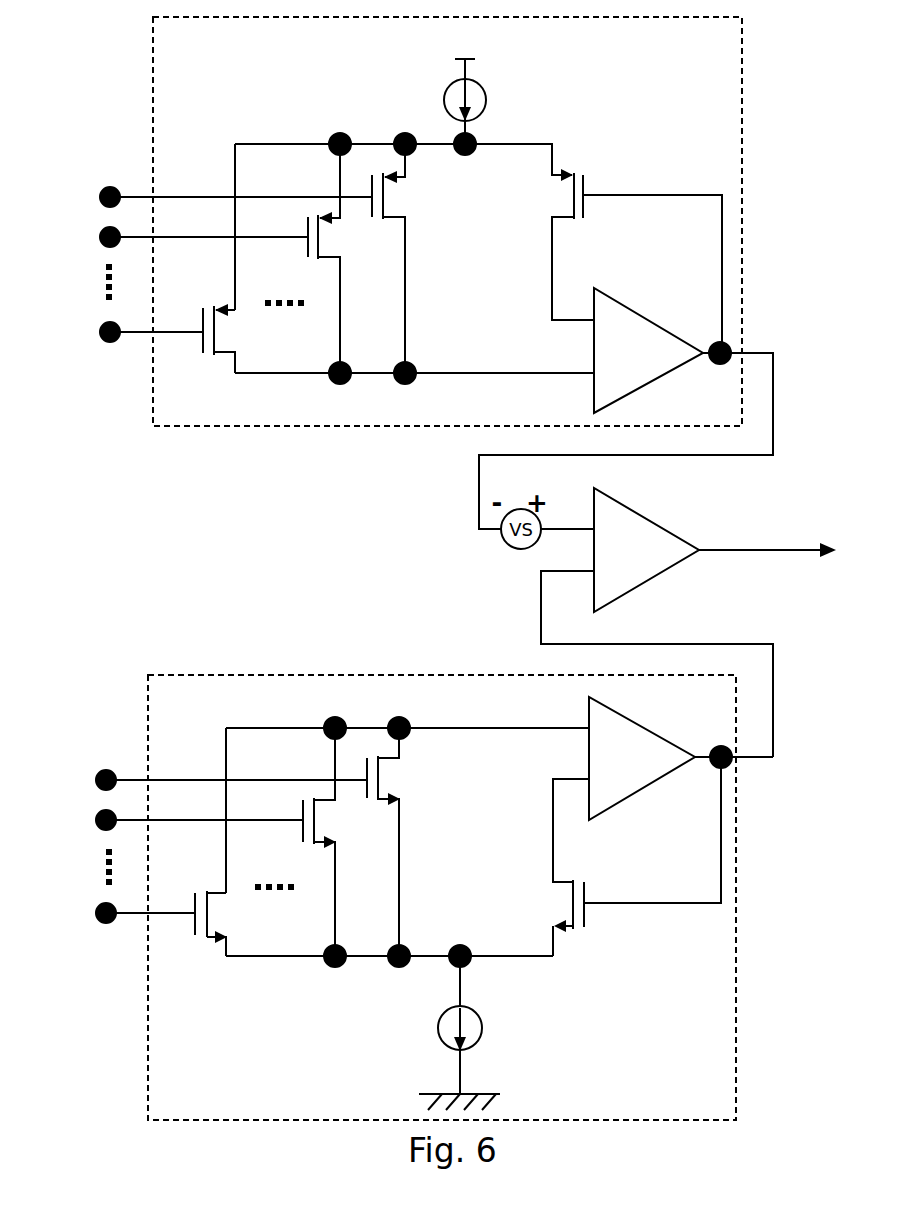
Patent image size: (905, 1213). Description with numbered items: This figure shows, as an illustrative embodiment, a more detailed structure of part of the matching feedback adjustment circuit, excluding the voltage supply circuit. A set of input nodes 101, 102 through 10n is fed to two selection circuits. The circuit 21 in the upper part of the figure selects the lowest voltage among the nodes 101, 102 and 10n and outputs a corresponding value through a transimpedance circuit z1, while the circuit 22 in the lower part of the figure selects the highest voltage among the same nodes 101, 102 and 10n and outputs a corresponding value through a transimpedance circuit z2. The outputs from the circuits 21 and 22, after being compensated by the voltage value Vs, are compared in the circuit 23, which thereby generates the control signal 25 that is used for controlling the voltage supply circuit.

The node 101 is at (219, 550).
The node 102 is at (186, 550).
The node 10n is at (134, 630).
The circuit 21 is at (152, 385).
The circuit 22 is at (146, 967).
The circuit 23 is at (663, 565).
The control signal 25 is at (753, 548).